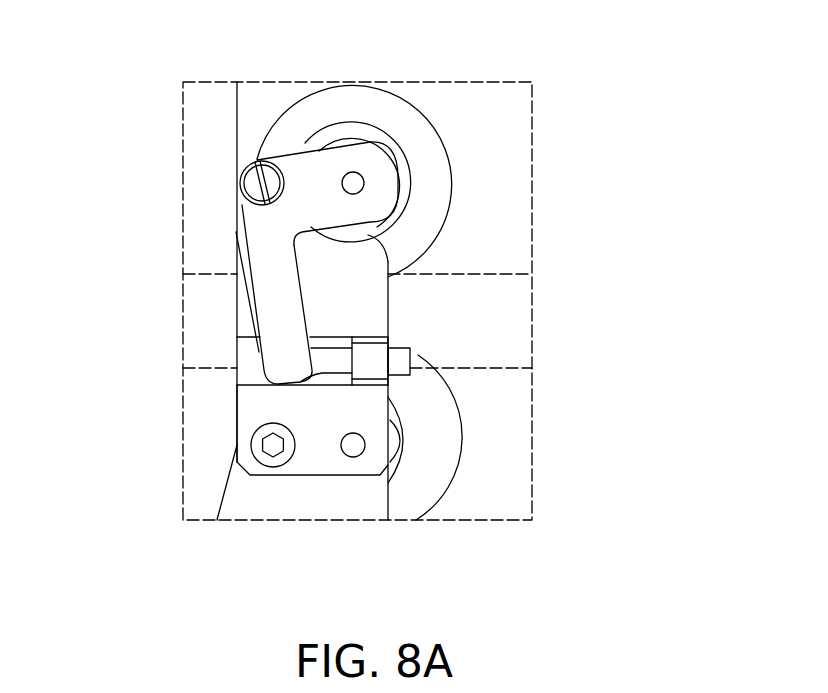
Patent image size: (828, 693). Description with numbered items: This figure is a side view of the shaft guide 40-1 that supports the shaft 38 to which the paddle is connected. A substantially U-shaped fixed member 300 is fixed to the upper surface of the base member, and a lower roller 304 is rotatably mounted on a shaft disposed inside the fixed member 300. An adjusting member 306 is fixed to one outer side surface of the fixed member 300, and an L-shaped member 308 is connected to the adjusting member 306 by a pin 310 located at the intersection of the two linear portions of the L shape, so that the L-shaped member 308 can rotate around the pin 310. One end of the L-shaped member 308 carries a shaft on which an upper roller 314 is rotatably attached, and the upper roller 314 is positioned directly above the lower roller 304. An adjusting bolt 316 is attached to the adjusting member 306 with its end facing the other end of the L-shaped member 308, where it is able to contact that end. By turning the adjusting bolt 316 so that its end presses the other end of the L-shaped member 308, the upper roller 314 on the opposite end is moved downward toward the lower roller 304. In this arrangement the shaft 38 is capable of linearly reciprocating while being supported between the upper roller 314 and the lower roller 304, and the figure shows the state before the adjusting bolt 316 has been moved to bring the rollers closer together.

The brake assembly 40-1 is at (541, 138).
The shaft 38 is at (512, 297).
The fixed member 300 is at (300, 495).
The lower roller 304 is at (418, 485).
The adjusting member 306 is at (357, 413).
The L-shaped member 308 is at (330, 167).
The pin 310 is at (248, 181).
The upper roller 314 is at (392, 117).
The adjusting bolt 316 is at (322, 357).